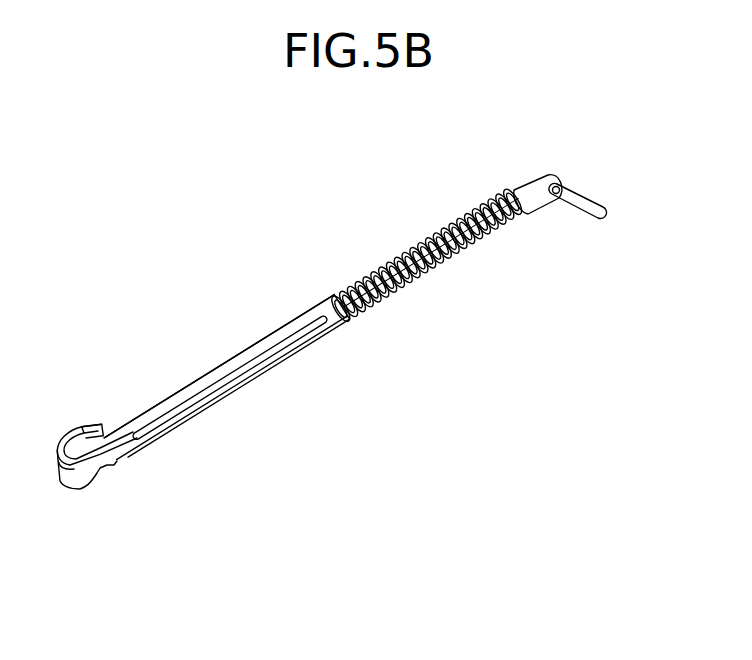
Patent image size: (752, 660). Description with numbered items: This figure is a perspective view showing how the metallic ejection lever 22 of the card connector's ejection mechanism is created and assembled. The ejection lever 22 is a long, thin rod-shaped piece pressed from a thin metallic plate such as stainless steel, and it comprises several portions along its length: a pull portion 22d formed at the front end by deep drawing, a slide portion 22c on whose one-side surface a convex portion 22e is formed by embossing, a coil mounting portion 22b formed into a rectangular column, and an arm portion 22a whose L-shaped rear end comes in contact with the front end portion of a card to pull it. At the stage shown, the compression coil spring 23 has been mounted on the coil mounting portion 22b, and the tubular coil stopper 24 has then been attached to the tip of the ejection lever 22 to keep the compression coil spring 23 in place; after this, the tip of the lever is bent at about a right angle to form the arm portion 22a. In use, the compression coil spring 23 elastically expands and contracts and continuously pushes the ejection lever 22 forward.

The ejection lever 22 is at (85, 505).
The arm portion 22a is at (585, 198).
The coil mounting portion 22b is at (405, 288).
The slide portion 22c is at (235, 359).
The pull portion 22d is at (83, 427).
The convex portion 22e is at (250, 373).
The compression coil spring 23 is at (432, 248).
The tubular coil stopper 24 is at (520, 188).